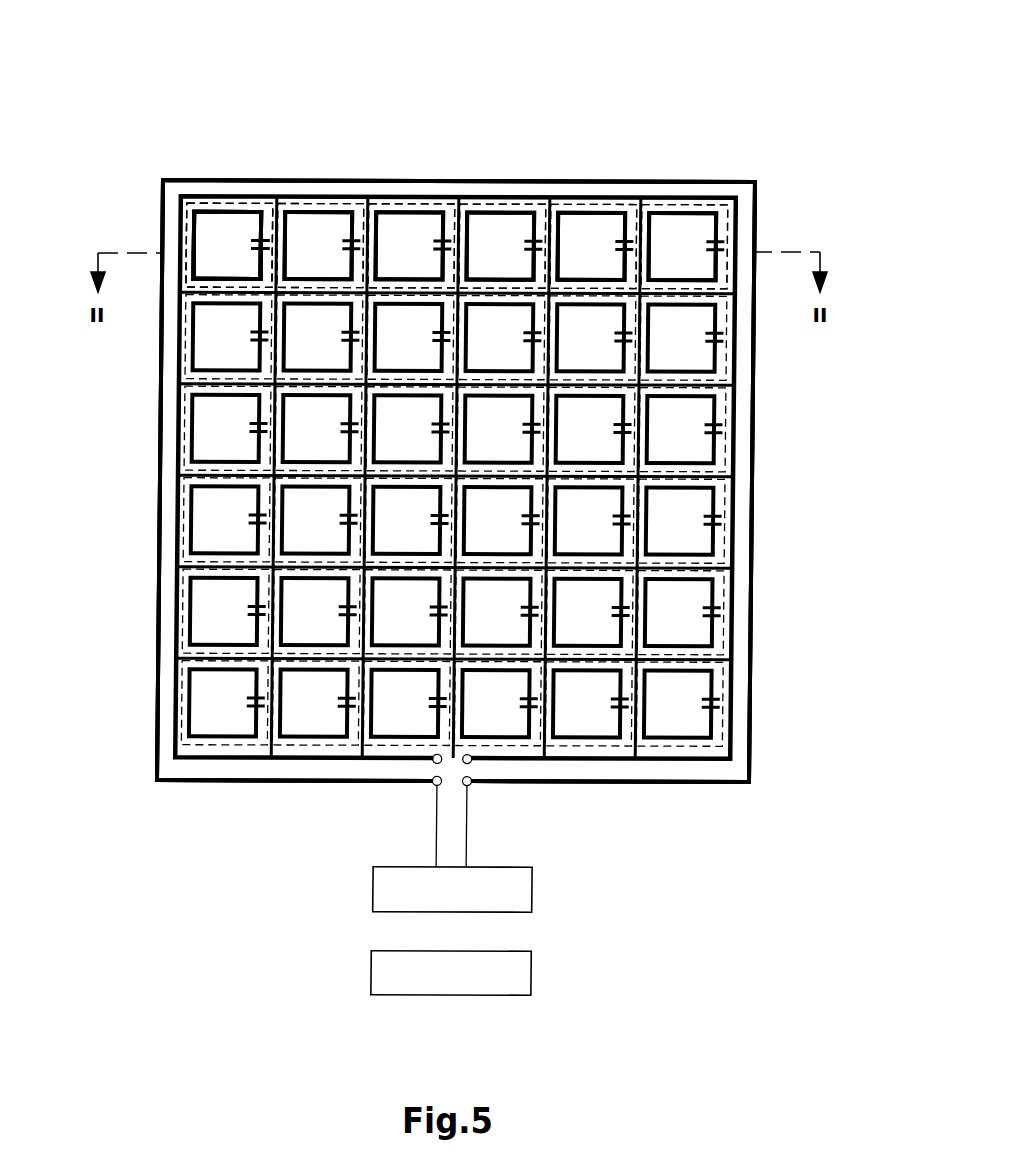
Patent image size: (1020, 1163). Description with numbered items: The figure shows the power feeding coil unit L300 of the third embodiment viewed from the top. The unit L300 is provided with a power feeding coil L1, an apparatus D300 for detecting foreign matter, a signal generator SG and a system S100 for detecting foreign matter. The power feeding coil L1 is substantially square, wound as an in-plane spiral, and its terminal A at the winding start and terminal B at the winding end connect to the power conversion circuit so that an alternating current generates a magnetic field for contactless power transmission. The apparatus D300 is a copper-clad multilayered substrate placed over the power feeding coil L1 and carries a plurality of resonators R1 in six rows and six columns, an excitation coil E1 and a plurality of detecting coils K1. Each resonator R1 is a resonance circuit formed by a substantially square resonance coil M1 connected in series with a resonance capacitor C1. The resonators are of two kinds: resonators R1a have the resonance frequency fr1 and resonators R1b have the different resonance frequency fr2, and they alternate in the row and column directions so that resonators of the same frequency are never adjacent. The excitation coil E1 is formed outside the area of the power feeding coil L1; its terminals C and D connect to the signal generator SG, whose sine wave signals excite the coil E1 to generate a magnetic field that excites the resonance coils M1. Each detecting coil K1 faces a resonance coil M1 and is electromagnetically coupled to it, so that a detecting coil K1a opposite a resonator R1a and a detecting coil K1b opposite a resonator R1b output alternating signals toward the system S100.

The apparatus for detecting foreign matter D300 is at (872, 55).
The detecting coil K1 is at (158, 70).
The detecting coil K1a is at (222, 205).
The detecting coil K1b is at (273, 228).
The resonator R1 is at (765, 110).
The resonator R1a is at (232, 210).
The resonator R1b is at (325, 208).
The excitation coil E1 is at (752, 237).
The resonance coil M1 is at (197, 270).
The resonance capacitor C1 is at (257, 250).
The power feeding coil L1 is at (740, 712).
The terminal A is at (434, 766).
The terminal B is at (472, 766).
The terminal C is at (435, 786).
The terminal D is at (473, 788).
The signal generator SG is at (533, 892).
The system for detecting foreign matter S100 is at (533, 972).
The power feeding coil unit L300 is at (473, 1070).
The resonance frequency fr1 is at (454, 474).
The resonance frequency fr2 is at (454, 474).